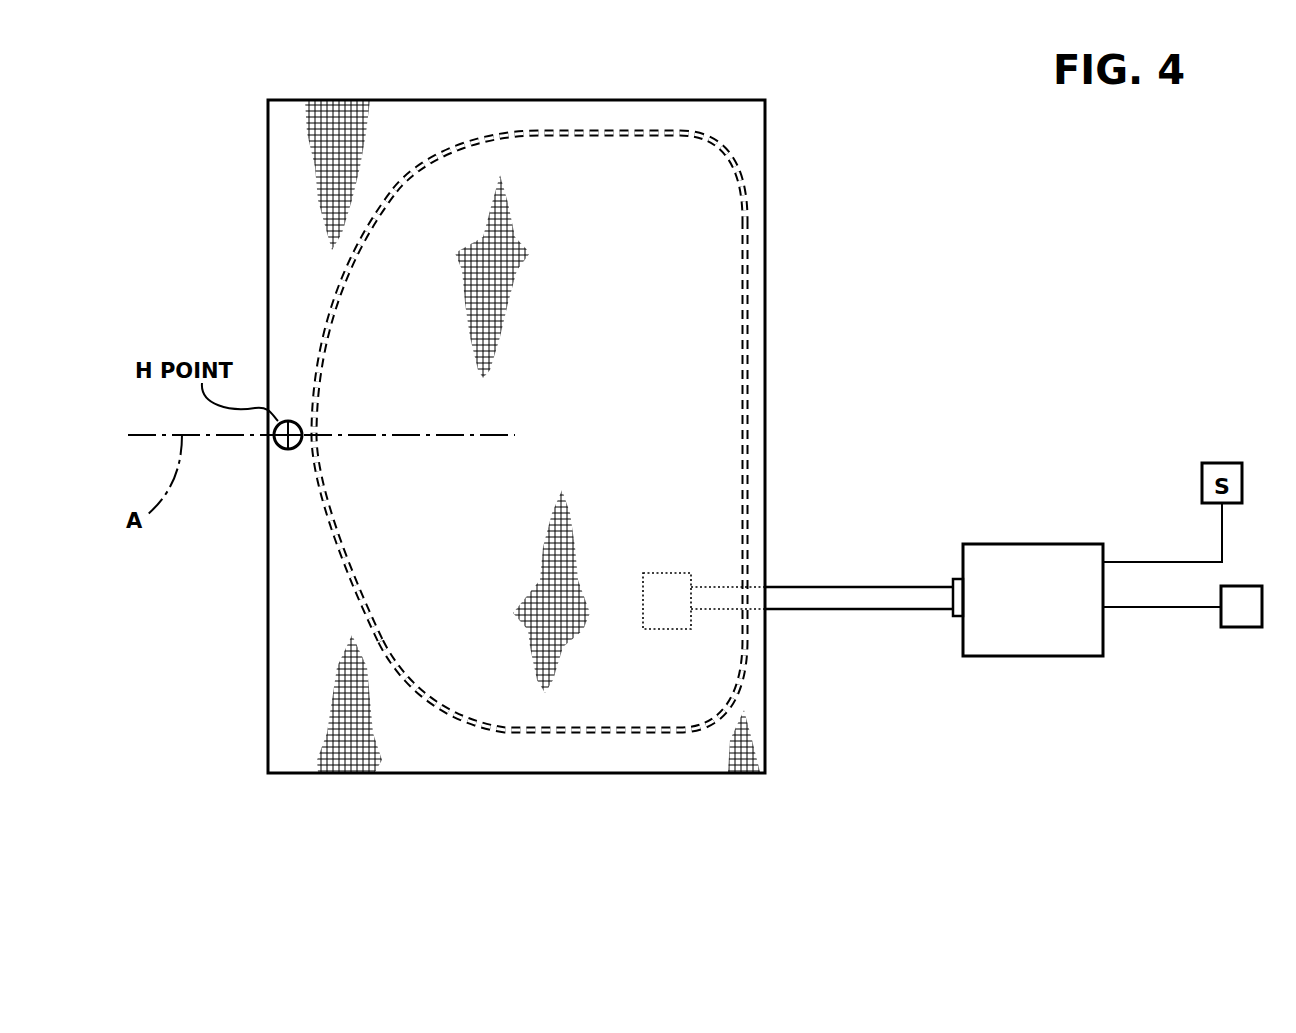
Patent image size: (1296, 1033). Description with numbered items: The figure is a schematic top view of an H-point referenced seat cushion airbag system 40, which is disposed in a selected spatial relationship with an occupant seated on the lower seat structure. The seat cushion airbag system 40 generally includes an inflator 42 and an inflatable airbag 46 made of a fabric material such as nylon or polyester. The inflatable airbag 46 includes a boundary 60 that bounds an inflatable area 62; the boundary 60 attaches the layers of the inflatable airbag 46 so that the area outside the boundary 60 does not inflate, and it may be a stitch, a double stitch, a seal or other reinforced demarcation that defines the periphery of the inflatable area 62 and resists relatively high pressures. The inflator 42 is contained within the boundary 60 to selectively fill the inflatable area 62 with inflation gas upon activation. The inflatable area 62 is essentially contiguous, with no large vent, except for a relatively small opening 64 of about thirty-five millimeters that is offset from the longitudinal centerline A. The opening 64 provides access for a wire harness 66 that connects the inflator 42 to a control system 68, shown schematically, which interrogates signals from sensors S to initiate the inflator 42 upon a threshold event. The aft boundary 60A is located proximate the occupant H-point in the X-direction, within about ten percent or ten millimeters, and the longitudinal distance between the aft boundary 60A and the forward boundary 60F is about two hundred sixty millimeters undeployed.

The seat cushion airbag system 40 is at (956, 355).
The inflator 42 is at (667, 601).
The inflatable airbag 46 is at (732, 94).
The boundary 60 is at (505, 742).
The aft boundary 60A is at (341, 581).
The forward boundary 60F is at (743, 298).
The inflatable area 62 is at (528, 434).
The opening 64 is at (744, 613).
The wire harness 66 is at (922, 598).
The control system 68 is at (1028, 600).